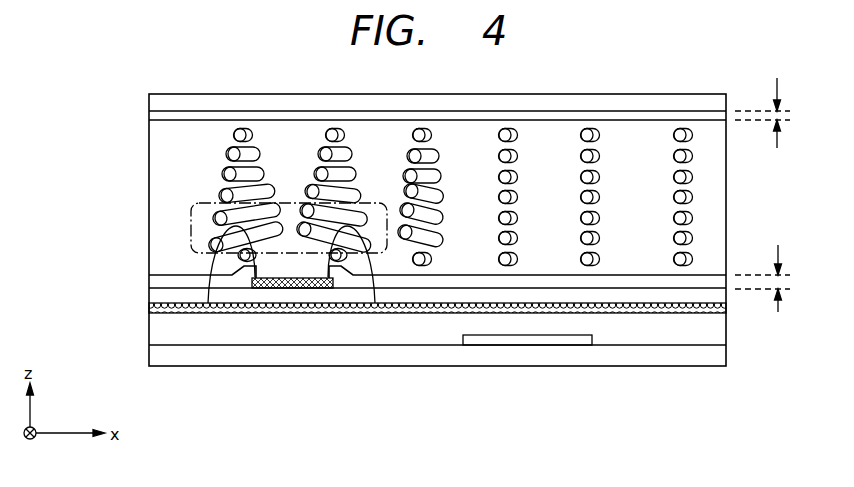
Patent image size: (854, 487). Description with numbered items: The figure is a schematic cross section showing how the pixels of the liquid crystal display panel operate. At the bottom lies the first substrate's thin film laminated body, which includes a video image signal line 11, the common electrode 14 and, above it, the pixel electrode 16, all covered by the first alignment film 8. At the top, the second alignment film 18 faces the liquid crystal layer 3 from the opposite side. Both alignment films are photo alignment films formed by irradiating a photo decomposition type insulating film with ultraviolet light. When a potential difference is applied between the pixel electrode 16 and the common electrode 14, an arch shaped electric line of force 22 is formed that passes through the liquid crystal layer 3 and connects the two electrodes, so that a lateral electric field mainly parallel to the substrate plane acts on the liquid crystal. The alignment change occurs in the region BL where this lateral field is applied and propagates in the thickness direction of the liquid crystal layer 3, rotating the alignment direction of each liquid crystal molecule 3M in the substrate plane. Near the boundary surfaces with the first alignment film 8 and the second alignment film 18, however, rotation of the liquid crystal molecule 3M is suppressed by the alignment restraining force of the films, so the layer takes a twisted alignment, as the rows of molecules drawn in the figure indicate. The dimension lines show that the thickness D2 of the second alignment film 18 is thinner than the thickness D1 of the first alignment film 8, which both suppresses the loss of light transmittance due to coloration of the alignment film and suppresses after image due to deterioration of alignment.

The second alignment film 18 is at (175, 116).
The liquid crystal molecule 3M is at (240, 130).
The liquid crystal layer 3 is at (496, 161).
The region BL is at (187, 222).
The electric line of force 22 is at (203, 263).
The first alignment film 8 is at (185, 281).
The pixel electrode 16 is at (286, 288).
The common electrode 14 is at (356, 305).
The video image signal line 11 is at (528, 340).
The thickness of the first alignment film D1 is at (778, 280).
The thickness of the second alignment film D2 is at (776, 113).